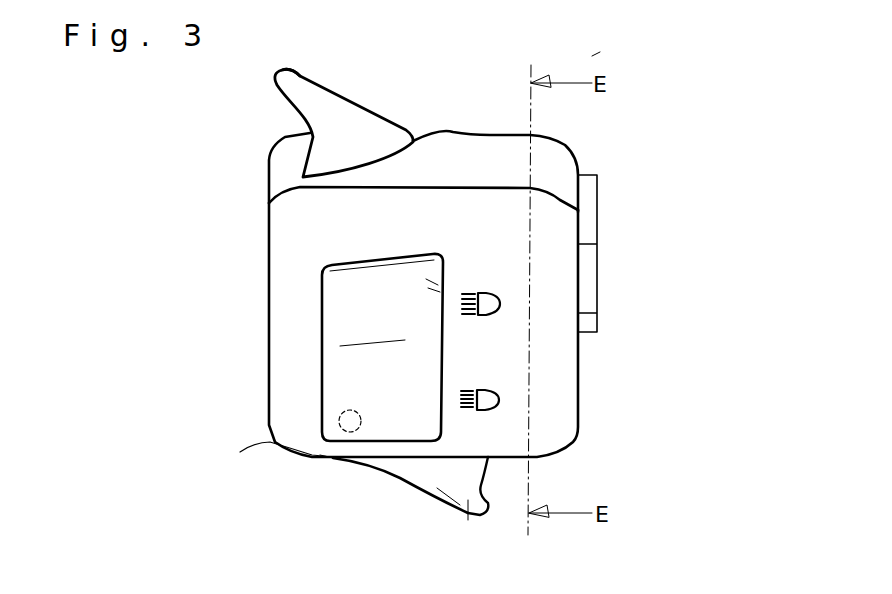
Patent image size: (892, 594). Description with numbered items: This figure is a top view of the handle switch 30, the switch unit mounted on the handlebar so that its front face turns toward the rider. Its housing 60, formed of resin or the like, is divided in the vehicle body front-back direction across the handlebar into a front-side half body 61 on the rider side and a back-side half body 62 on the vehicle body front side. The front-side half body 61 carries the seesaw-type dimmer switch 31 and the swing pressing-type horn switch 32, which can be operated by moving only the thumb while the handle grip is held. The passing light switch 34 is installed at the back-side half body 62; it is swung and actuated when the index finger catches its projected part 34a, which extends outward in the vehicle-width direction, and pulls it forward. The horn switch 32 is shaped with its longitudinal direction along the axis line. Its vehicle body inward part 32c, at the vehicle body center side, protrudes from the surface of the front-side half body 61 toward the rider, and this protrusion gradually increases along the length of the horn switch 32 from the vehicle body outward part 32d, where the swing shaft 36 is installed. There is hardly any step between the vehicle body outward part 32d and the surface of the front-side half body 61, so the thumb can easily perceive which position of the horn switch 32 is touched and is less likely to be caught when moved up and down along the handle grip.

The handle switch 30 is at (600, 47).
The dimmer switch 31 is at (313, 369).
The horn switch 32 is at (371, 509).
The vehicle body inward part 32c is at (468, 516).
The vehicle body outward part 32d is at (333, 466).
The passing light switch 34 is at (348, 99).
The projected part 34a is at (290, 78).
The swing shaft 36 is at (337, 425).
The housing 60 is at (368, 294).
The front-side half body 61 is at (283, 236).
The back-side half body 62 is at (283, 179).